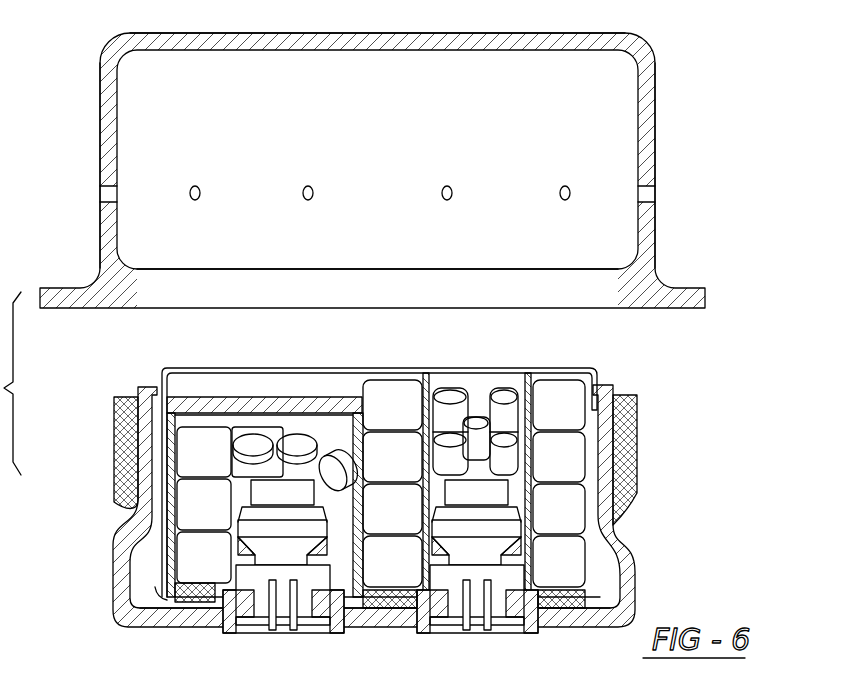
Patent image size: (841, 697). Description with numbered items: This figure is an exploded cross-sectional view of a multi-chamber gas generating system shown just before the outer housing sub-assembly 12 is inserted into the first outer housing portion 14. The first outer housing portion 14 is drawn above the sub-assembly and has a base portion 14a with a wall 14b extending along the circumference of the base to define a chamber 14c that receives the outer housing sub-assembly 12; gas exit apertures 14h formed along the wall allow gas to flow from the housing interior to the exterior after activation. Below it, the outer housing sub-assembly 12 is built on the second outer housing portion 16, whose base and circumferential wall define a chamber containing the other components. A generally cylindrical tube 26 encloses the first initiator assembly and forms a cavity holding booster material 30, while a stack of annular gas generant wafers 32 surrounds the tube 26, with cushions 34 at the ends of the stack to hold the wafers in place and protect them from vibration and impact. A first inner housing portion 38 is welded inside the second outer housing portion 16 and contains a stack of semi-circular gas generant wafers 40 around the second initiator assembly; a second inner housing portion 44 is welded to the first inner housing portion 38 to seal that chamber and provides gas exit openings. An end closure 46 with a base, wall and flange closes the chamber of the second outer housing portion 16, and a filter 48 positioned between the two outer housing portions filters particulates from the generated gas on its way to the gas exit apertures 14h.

The outer housing sub-assembly 12 is at (637, 570).
The first outer housing portion 14 is at (658, 113).
The base portion 14a is at (593, 33).
The wall 14b is at (657, 222).
The chamber 14c is at (242, 130).
The gas exit apertures 14h is at (450, 200).
The second outer housing portion 16 is at (620, 628).
The tube 26 is at (532, 405).
The booster material 30 is at (512, 460).
The gas generant wafers 32 is at (573, 567).
The cushions 34 is at (190, 592).
The first inner housing portion 38 is at (163, 558).
The gas generant wafers 40 is at (203, 507).
The second inner housing portion 44 is at (233, 398).
The end closure 46 is at (362, 366).
The filter 48 is at (125, 453).